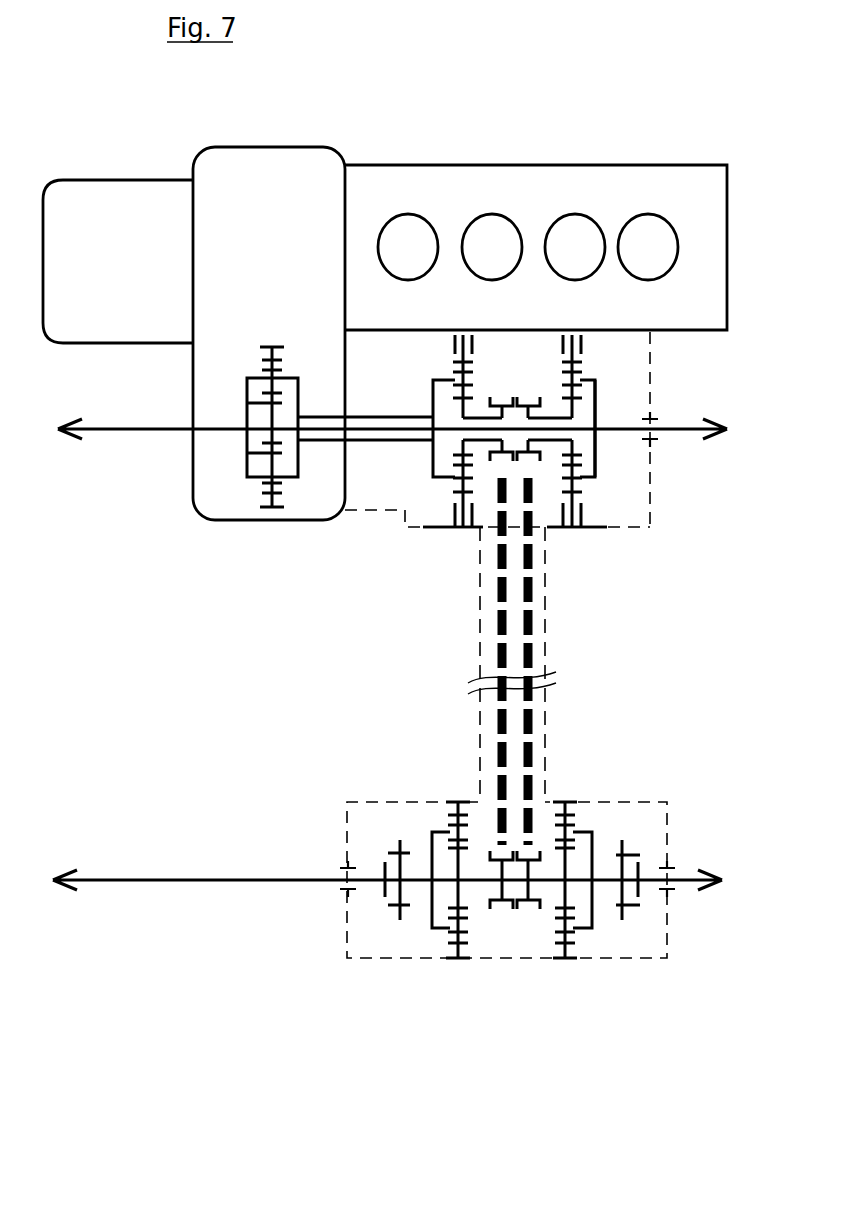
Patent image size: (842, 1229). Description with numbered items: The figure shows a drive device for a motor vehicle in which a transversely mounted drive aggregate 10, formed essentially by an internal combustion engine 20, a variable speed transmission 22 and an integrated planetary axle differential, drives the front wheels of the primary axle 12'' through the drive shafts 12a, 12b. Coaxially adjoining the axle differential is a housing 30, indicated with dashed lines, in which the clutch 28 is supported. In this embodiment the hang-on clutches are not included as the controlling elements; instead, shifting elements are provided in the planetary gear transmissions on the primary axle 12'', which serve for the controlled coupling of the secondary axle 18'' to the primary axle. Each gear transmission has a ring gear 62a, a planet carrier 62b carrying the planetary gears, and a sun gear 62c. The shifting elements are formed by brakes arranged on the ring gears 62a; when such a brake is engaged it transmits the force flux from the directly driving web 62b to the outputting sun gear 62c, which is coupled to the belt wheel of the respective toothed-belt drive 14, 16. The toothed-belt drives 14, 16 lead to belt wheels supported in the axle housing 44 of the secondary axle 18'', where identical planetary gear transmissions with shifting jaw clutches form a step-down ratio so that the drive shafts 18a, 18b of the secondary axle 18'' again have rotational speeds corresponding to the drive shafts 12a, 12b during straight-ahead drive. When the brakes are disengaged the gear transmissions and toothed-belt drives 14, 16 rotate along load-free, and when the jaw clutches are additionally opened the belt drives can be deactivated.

The drive aggregate 10 is at (632, 128).
The internal combustion engine 20 is at (470, 205).
The variable speed transmission 22 is at (135, 272).
The hang-on clutch 28 is at (270, 338).
The drive shaft 12a is at (128, 433).
The drive shaft 12b is at (684, 428).
The primary axle 12'' is at (549, 498).
The housing 30 is at (653, 366).
The ring gear 62a is at (456, 344).
The planet carrier 62b is at (433, 398).
The sun gear 62c is at (441, 455).
The toothed-belt drive 14 is at (494, 701).
The toothed-belt drive 16 is at (535, 731).
The axle housing 44 is at (373, 796).
The secondary axle 18'' is at (412, 887).
The drive shaft 18a is at (180, 877).
The drive shaft 18b is at (684, 878).